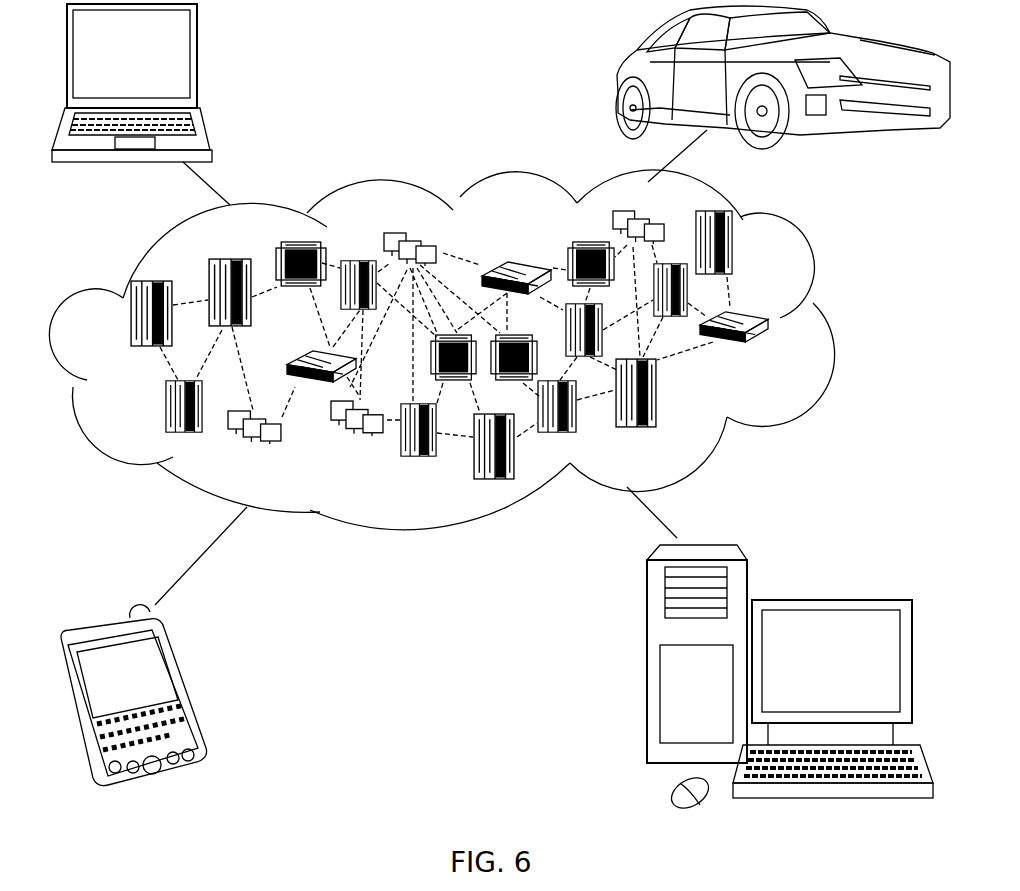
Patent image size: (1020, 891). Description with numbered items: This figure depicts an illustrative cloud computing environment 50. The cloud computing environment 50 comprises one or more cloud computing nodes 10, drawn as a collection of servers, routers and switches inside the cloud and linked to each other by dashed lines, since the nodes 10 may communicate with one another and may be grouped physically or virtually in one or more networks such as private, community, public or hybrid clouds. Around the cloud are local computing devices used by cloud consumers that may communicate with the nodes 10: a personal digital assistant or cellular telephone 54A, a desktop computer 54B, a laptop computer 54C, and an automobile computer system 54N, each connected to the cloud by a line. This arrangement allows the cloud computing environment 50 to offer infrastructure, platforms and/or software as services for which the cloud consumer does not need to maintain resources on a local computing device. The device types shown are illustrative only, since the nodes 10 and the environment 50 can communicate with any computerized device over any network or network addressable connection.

The cloud computing node 10 is at (773, 352).
The cloud computing environment 50 is at (830, 321).
The personal digital assistant or cellular telephone 54A is at (187, 687).
The desktop computer 54B is at (830, 598).
The laptop computer 54C is at (200, 63).
The automobile computer system 54N is at (618, 78).